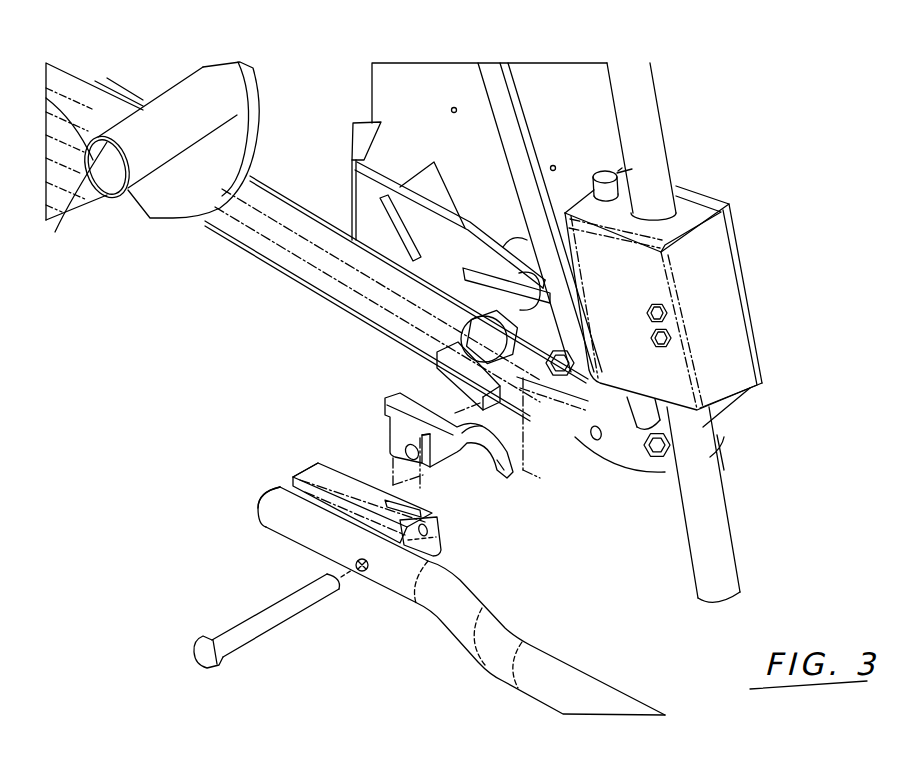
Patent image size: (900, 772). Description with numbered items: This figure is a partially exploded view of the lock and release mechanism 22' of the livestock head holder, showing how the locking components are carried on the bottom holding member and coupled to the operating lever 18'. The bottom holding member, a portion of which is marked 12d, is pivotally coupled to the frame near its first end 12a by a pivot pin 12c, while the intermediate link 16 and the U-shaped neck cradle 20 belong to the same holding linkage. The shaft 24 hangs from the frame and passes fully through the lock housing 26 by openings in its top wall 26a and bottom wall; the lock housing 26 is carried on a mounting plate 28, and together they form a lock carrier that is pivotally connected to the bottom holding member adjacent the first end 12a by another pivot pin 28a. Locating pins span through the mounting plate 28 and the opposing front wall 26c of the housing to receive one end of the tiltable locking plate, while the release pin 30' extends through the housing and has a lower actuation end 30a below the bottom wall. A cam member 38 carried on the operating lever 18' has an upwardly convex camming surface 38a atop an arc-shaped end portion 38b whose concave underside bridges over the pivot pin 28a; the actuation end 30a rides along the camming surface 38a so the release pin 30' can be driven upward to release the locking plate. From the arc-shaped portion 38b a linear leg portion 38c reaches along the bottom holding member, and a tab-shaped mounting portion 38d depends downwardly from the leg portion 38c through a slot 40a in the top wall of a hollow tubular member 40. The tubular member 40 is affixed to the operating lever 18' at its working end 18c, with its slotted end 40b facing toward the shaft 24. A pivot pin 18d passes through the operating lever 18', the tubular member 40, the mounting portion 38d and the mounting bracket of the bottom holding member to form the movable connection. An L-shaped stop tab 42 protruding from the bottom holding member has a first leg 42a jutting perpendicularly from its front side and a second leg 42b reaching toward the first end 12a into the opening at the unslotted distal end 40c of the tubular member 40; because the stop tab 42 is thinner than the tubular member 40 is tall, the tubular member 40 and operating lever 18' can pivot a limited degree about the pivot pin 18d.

The first end of bottom holding member 12a is at (723, 457).
The pivot pin of bottom holding member 12c is at (458, 330).
The frame beam 12d is at (280, 207).
The intermediate link 16 is at (513, 137).
The operating lever 18' is at (461, 601).
The working end of operating lever 18c is at (262, 496).
The pivot pin of operating lever 18d is at (197, 665).
The U-shaped neck cradle 20 is at (55, 232).
The lock and release mechanism 22' is at (778, 150).
The shaft 24 is at (718, 528).
The lock housing 26 is at (722, 311).
The top wall of lock housing 26a is at (687, 213).
The front wall of lock housing 26c is at (577, 413).
The mounting plate 28 is at (729, 414).
The pivot pin of mounting plate 28a is at (647, 457).
The release pin 30' is at (602, 169).
The lower actuation end of release pin 30a is at (640, 426).
The cam member 38 is at (411, 396).
The camming surface 38a is at (483, 432).
The arc-shaped end portion 38b is at (492, 465).
The linear leg portion 38c is at (432, 466).
The tab-shaped mounting portion 38d is at (390, 443).
The hollow tubular member 40 is at (335, 473).
The slot 40a is at (390, 502).
The slotted end of tubular member 40b is at (440, 537).
The unslotted distal end of tubular member 40c is at (307, 468).
The L-shaped stop tab 42 is at (458, 386).
The first leg of stop tab 42a is at (464, 364).
The second leg of stop tab 42b is at (497, 380).